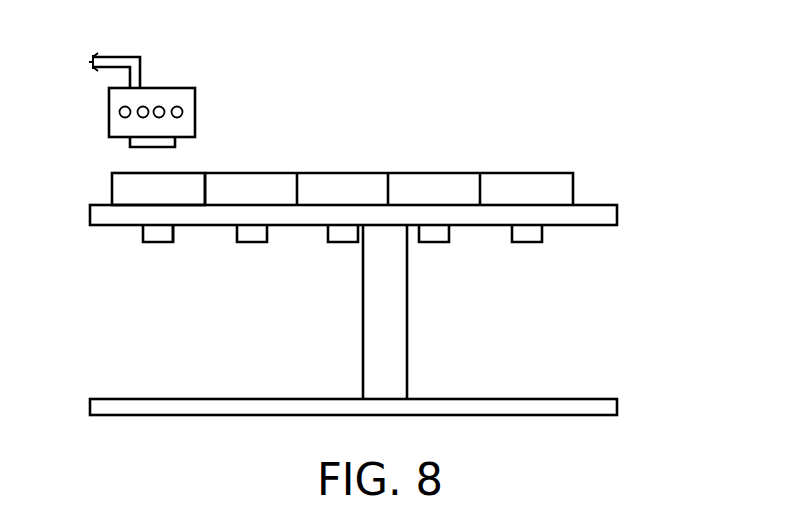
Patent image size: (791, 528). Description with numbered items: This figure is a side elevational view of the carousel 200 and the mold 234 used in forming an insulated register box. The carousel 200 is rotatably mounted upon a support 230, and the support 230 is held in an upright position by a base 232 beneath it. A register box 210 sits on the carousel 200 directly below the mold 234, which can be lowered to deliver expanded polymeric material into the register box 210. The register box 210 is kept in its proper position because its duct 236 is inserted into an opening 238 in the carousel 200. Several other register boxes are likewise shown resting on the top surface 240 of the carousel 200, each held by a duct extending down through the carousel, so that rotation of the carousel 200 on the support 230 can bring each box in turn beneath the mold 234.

The carousel 200 is at (618, 208).
The register box 210 is at (117, 192).
The top surface 240 is at (592, 200).
The duct 236 is at (160, 238).
The opening 238 is at (175, 228).
The support 230 is at (395, 310).
The base 232 is at (508, 398).
The mold 234 is at (195, 112).